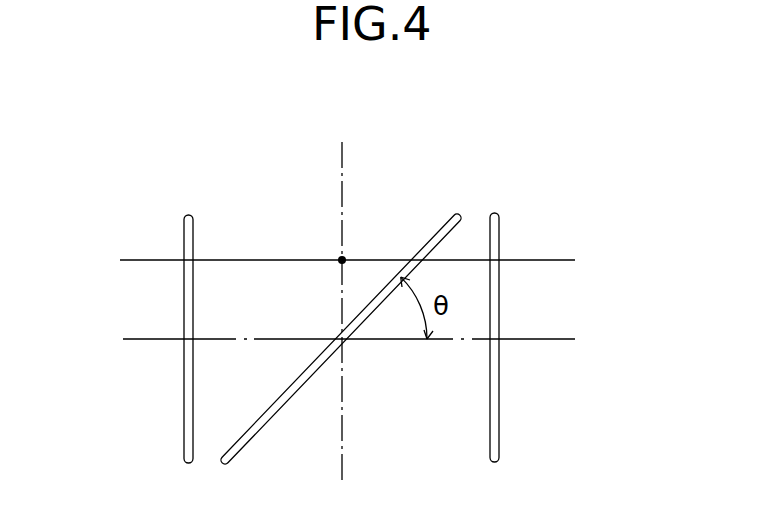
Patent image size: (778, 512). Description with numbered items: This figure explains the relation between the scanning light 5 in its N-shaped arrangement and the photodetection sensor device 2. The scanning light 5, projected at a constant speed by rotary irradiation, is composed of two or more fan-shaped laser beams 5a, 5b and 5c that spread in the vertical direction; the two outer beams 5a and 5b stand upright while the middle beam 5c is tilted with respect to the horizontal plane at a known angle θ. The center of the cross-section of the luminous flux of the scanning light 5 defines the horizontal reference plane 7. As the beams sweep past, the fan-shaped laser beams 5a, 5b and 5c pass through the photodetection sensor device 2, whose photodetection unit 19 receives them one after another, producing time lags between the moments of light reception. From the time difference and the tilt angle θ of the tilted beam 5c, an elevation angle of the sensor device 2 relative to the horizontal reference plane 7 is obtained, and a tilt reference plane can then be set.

The scanning light 5 is at (332, 285).
The fan-shaped laser beam 5a is at (499, 427).
The fan-shaped laser beam 5b is at (184, 398).
The fan-shaped laser beam 5c is at (447, 220).
The photodetection sensor device 2 is at (341, 259).
The photodetection unit 19 is at (528, 259).
The horizontal reference plane 7 is at (553, 338).